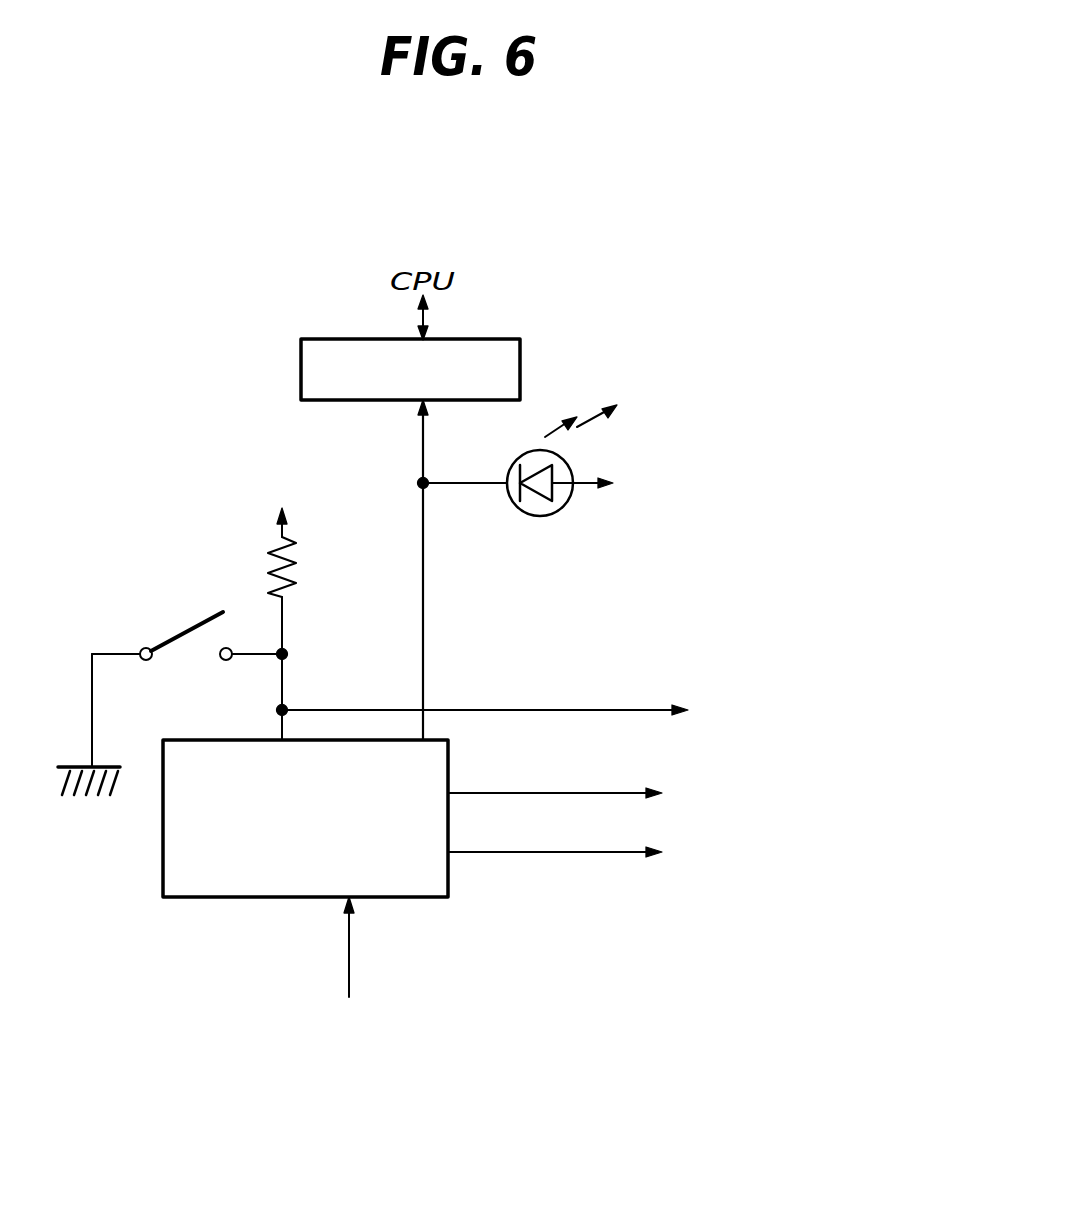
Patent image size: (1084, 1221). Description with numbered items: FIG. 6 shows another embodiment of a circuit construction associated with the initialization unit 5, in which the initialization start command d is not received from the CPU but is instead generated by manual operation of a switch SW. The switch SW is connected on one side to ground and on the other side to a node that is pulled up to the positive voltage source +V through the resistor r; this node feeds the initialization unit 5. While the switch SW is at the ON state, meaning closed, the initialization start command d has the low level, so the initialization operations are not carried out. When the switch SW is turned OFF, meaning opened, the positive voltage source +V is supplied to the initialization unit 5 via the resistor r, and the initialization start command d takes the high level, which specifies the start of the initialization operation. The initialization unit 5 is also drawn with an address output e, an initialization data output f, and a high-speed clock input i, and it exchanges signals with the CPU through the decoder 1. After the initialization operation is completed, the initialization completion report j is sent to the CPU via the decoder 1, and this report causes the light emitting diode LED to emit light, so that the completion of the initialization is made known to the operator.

The decoder 1 is at (480, 338).
The initialization unit 5 is at (415, 898).
The resistor r is at (284, 563).
The switch SW is at (201, 650).
The light emitting diode LED is at (572, 497).
The initialization start command d is at (282, 675).
The initialization completion report j is at (423, 668).
The address e is at (465, 793).
The initialization data f is at (470, 852).
The high-speed clock i is at (371, 967).